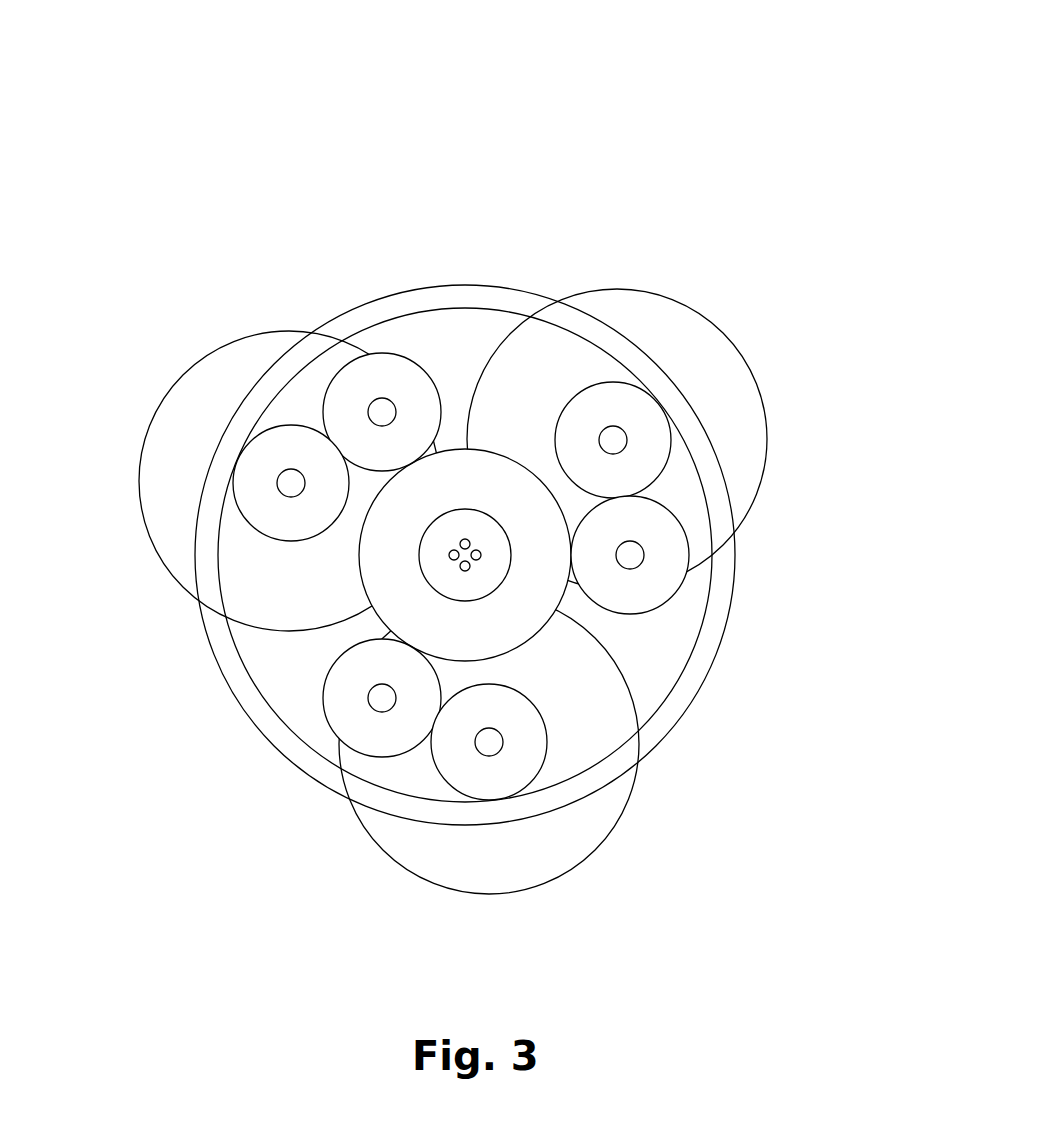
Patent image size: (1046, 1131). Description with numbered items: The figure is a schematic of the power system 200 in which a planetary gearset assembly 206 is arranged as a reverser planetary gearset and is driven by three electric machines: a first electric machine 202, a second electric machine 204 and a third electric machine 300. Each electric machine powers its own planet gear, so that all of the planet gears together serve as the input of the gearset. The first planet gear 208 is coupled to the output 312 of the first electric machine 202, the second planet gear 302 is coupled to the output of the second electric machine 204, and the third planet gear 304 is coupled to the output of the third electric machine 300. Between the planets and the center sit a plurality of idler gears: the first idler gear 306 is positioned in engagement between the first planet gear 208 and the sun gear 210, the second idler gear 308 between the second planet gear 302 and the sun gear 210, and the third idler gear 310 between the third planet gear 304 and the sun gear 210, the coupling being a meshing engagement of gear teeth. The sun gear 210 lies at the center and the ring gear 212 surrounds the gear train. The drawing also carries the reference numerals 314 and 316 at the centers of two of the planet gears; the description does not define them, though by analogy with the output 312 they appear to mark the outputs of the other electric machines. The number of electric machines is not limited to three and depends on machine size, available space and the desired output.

The power system 200 is at (694, 128).
The first electric machine 202 is at (721, 352).
The second electric machine 204 is at (553, 858).
The planetary gearset assembly 206 is at (748, 673).
The first planet gear 208 is at (696, 367).
The sun gear 210 is at (400, 568).
The ring gear 212 is at (464, 297).
The third electric machine 300 is at (168, 432).
The second planet gear 302 is at (506, 785).
The third planet gear 304 is at (218, 442).
The first idler gear 306 is at (665, 558).
The second idler gear 308 is at (345, 700).
The third idler gear 310 is at (385, 370).
The output of the first electric machine 312 is at (613, 440).
The roller pin 314 is at (490, 742).
The roller pin 316 is at (290, 483).